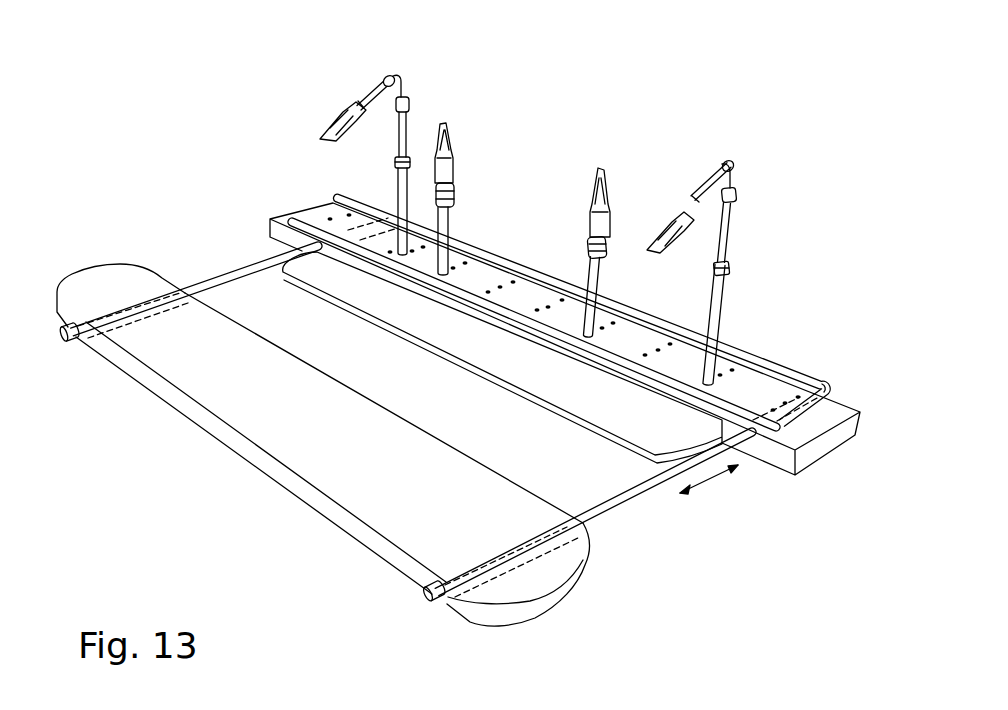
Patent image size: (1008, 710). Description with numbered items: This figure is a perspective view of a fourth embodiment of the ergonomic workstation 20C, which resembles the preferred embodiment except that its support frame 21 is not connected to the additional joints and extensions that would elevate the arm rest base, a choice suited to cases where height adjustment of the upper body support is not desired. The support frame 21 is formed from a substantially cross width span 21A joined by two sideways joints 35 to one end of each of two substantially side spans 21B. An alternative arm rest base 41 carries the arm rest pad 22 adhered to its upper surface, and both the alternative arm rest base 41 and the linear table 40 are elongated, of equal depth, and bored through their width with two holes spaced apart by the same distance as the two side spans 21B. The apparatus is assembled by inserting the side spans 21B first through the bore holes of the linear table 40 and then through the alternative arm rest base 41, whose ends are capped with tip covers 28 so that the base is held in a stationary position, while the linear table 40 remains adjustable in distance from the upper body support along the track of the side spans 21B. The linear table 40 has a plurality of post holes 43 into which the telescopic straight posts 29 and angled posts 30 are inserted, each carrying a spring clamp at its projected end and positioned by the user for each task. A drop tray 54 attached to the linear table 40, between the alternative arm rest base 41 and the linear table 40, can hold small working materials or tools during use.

The ergonomic workstation 20C is at (317, 547).
The support frame 21 is at (603, 522).
The cross width span 21A is at (767, 362).
The side spans 21B is at (630, 497).
The arm rest pad 22 is at (313, 384).
The tip covers 28 is at (63, 342).
The telescopic straight posts 29 is at (590, 273).
The angled posts 30 is at (400, 188).
The sideways joints 35 is at (833, 388).
The linear table 40 is at (822, 450).
The alternative arm rest base 41 is at (293, 483).
The post holes 43 is at (347, 208).
The drop tray 54 is at (580, 405).